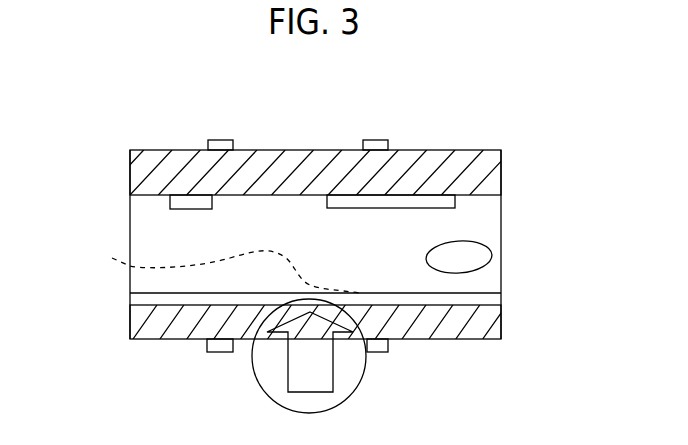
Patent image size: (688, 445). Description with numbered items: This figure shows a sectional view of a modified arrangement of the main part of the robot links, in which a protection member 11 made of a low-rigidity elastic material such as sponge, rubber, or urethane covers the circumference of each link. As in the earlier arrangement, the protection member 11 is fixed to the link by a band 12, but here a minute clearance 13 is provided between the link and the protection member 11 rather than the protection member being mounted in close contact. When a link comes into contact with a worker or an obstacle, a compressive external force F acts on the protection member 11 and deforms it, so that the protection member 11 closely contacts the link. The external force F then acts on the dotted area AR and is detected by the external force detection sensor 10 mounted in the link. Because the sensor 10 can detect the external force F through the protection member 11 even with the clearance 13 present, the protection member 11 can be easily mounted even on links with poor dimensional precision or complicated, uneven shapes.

The external force detection sensor 10 is at (468, 252).
The protection member 11 is at (480, 168).
The band 12 is at (218, 140).
The clearance 13 is at (145, 300).
The dotted area AR is at (222, 268).
The external force F is at (309, 356).